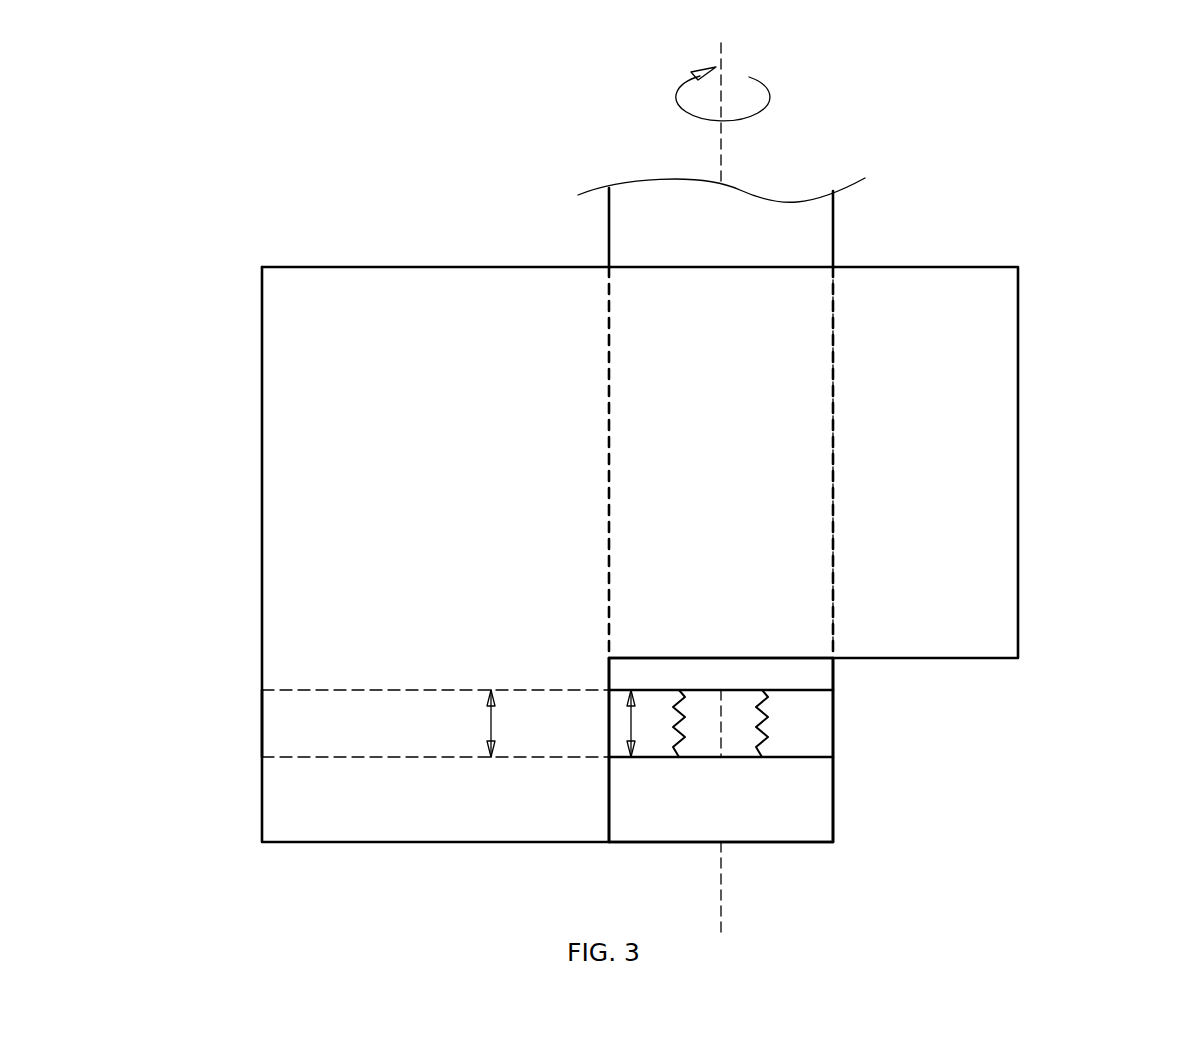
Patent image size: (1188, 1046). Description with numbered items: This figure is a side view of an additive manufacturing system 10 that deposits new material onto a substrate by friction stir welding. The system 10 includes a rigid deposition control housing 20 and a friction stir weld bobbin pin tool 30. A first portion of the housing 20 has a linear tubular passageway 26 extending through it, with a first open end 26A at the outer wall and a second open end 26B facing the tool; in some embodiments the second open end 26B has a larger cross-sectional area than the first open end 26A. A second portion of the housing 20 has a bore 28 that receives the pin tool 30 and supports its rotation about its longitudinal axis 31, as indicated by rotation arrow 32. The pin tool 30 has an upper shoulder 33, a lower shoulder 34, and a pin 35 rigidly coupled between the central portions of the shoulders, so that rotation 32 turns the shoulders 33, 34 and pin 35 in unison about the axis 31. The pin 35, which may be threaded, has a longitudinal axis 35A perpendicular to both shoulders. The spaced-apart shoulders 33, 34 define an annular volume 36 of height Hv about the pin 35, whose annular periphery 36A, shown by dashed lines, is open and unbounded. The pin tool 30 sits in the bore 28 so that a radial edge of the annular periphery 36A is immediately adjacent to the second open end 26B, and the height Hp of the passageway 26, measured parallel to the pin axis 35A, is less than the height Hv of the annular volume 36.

The additive manufacturing system 10 is at (1130, 169).
The deposition control housing 20 is at (633, 584).
The tubular passageway 26 is at (367, 796).
The first open end 26A is at (262, 703).
The second open end 26B is at (608, 733).
The bore 28 is at (833, 342).
The FSW bobbin pin tool 30 is at (850, 510).
The longitudinal axis 31 is at (721, 49).
The rotation arrow 32 is at (670, 95).
The upper shoulder 33 is at (798, 692).
The lower shoulder 34 is at (802, 757).
The pin 35 is at (692, 804).
The longitudinal axis of pin 35A is at (718, 730).
The annular volume 36 is at (808, 726).
The annular periphery 36A is at (833, 718).
The height of passageway Hp is at (495, 722).
The height of annular volume Hv is at (630, 718).